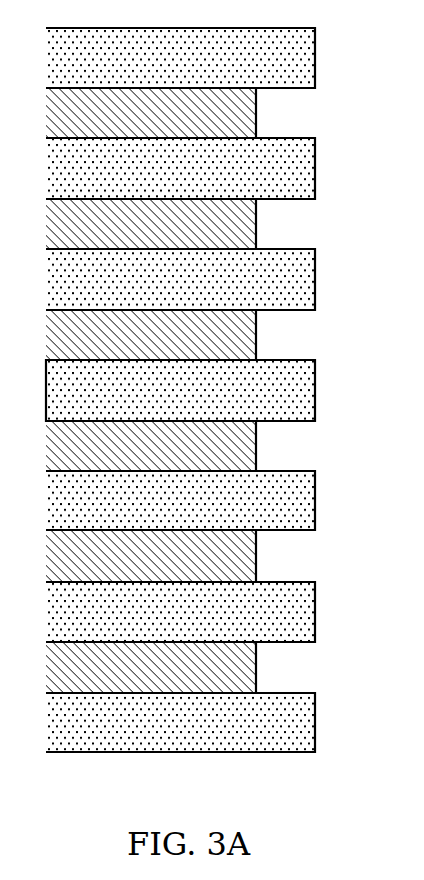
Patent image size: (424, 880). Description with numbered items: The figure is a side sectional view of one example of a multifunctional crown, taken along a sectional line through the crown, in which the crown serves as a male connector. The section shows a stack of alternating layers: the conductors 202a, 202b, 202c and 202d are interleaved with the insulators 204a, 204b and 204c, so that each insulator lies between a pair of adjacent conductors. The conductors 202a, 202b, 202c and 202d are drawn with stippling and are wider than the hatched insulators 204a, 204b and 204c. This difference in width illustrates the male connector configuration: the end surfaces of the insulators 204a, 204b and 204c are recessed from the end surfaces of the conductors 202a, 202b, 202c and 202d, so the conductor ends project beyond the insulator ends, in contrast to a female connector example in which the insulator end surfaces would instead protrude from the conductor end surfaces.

The conductor 202a is at (316, 388).
The conductor 202b is at (316, 276).
The conductor 202c is at (316, 166).
The conductor 202d is at (316, 55).
The insulator 204a is at (257, 332).
The insulator 204b is at (257, 221).
The insulator 204c is at (257, 110).